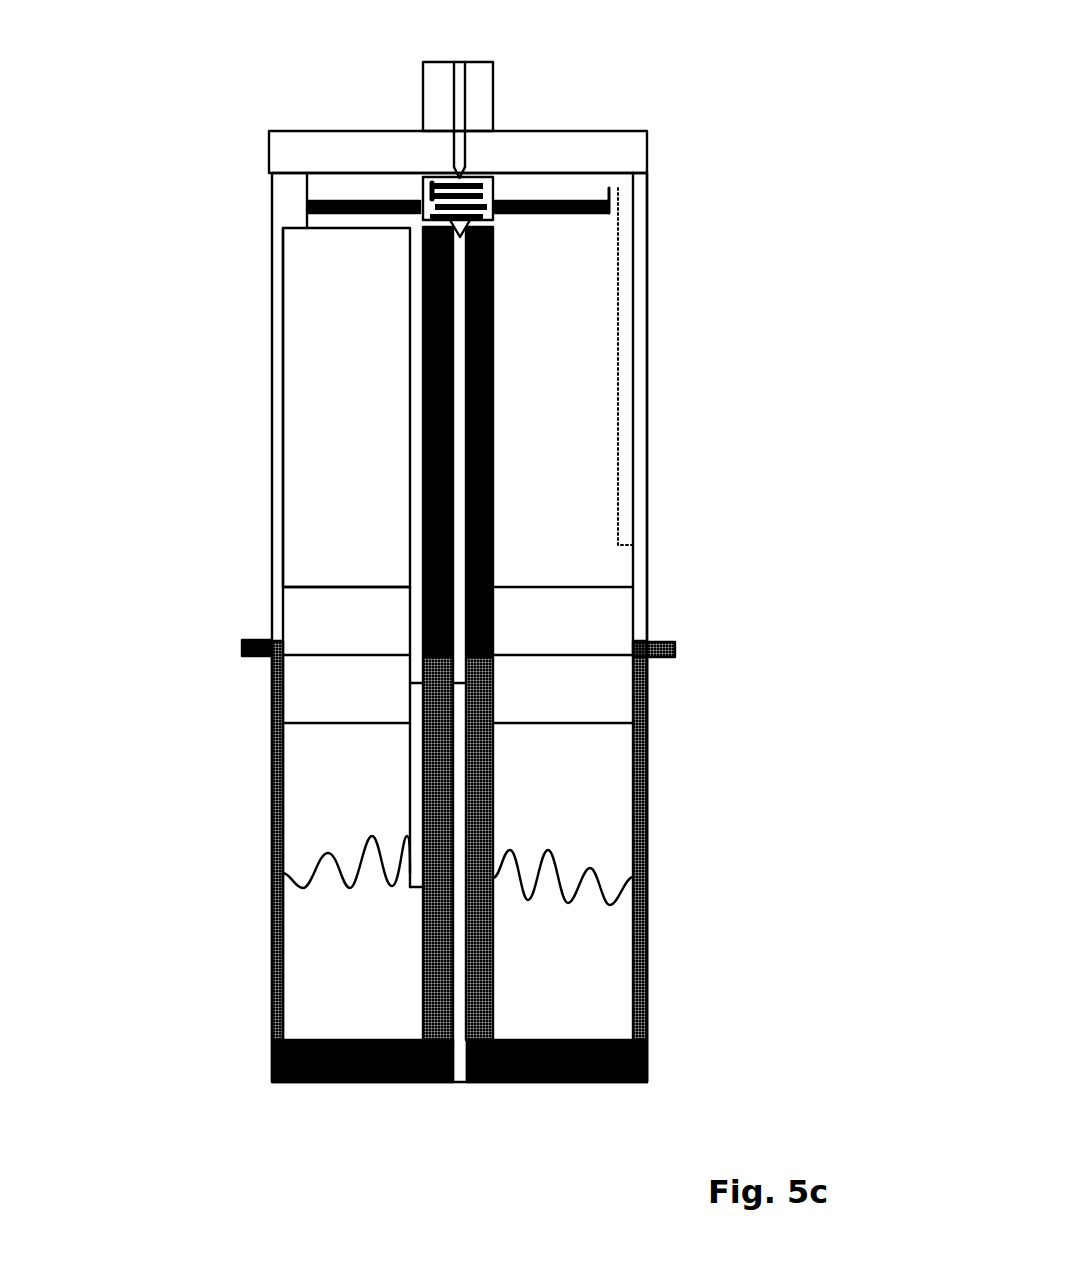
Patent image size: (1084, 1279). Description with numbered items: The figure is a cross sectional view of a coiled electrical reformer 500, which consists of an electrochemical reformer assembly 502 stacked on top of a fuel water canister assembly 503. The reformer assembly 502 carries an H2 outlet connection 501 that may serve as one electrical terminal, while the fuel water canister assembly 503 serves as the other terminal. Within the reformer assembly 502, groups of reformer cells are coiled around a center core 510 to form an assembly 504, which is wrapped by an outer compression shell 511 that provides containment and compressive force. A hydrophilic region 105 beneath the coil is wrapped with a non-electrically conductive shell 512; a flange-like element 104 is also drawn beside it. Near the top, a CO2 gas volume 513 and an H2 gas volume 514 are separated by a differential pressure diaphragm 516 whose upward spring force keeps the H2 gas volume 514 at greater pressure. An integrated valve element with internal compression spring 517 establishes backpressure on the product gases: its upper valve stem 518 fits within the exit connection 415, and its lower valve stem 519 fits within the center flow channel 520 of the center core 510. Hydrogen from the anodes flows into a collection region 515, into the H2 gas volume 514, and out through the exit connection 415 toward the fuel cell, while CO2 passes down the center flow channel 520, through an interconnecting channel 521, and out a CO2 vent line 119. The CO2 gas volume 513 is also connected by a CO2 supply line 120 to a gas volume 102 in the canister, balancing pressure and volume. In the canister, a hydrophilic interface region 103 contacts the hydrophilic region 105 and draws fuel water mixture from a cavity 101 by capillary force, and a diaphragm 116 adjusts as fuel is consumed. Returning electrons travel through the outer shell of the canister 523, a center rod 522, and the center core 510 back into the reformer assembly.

The coiled electrical reformer 500 is at (787, 265).
The H2 outlet connection 501 is at (497, 73).
The exit connection 415 is at (460, 97).
The integrated valve element with internal compression spring 517 is at (565, 207).
The upper valve stem 518 is at (460, 167).
The differential pressure diaphragm 516 is at (647, 178).
The H2 gas volume 514 is at (333, 186).
The CO2 gas volume 513 is at (328, 220).
The electrochemical reformer assembly 502 is at (660, 280).
The collection region 515 is at (627, 347).
The lower valve stem 519 is at (423, 246).
The assembly 504 is at (580, 462).
The center flow channel 520 is at (459, 385).
The CO2 supply line 120 is at (413, 498).
The center core 510 is at (493, 503).
The hydrophilic region 105 is at (306, 605).
The outer compression shell 511 is at (648, 573).
The left flange 104 is at (235, 651).
The non-electrically conductive shell 512 is at (648, 624).
The hydrophilic interface region 103 is at (307, 704).
The cavity 101 is at (300, 786).
The fuel water canister assembly 503 is at (662, 817).
The channel 521 is at (464, 752).
The center rod 522 is at (480, 915).
The diaphragm 116 is at (350, 886).
The gas volume 102 is at (302, 985).
The outer shell of the canister 523 is at (650, 982).
The CO2 vent line 119 is at (458, 1082).